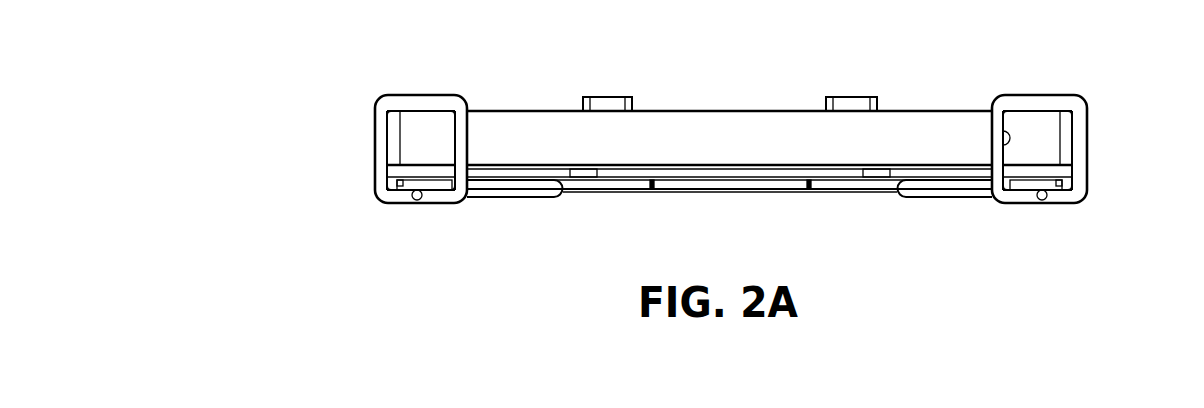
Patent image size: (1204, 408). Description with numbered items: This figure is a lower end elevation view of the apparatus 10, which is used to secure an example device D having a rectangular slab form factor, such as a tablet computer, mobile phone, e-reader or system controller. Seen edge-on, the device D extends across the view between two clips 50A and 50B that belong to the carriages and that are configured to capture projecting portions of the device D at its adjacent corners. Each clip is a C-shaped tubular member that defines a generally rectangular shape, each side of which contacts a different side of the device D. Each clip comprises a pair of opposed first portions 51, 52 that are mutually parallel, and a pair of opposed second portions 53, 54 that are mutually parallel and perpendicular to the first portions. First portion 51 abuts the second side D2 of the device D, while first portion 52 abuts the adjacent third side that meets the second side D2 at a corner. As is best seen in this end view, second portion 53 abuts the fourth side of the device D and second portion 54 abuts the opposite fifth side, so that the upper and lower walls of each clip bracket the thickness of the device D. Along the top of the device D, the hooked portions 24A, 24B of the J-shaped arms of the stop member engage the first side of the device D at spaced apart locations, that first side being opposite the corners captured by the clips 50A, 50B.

The apparatus 10 is at (597, 190).
The hooked portion 24A is at (845, 97).
The hooked portion 24B is at (607, 97).
The clip 50A is at (1080, 100).
The clip 50B is at (378, 102).
The first portion 51 is at (467, 137).
The first portion 52 is at (376, 140).
The second portion 53 is at (420, 97).
The second portion 54 is at (428, 203).
The device D is at (736, 154).
The second side D2 is at (840, 144).